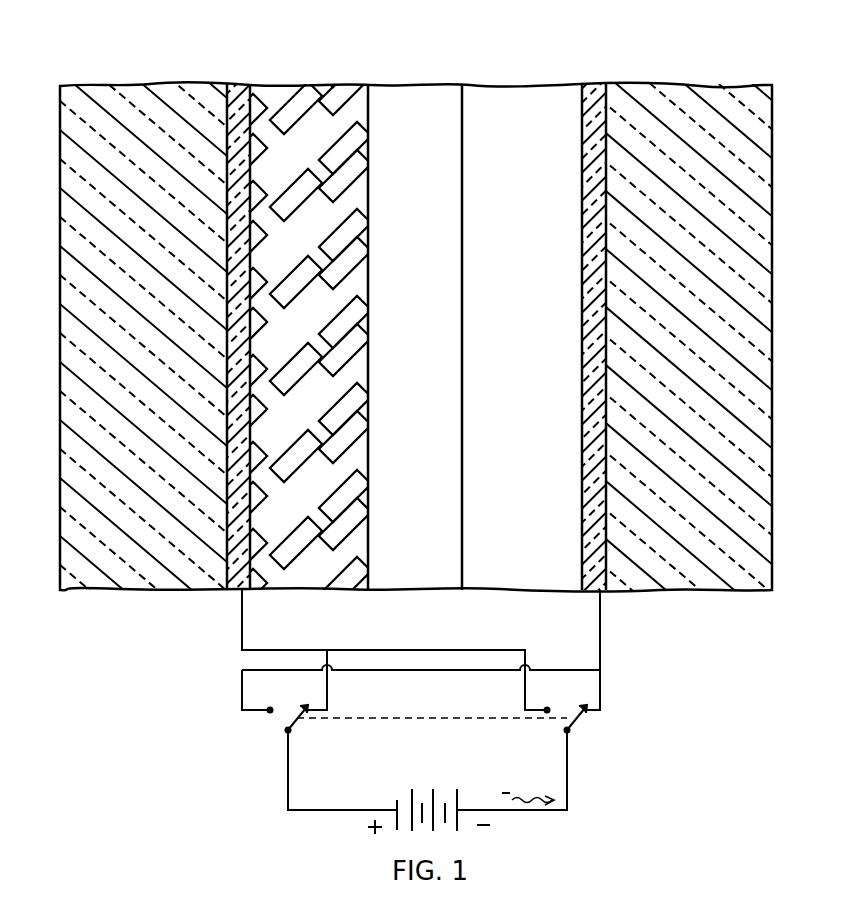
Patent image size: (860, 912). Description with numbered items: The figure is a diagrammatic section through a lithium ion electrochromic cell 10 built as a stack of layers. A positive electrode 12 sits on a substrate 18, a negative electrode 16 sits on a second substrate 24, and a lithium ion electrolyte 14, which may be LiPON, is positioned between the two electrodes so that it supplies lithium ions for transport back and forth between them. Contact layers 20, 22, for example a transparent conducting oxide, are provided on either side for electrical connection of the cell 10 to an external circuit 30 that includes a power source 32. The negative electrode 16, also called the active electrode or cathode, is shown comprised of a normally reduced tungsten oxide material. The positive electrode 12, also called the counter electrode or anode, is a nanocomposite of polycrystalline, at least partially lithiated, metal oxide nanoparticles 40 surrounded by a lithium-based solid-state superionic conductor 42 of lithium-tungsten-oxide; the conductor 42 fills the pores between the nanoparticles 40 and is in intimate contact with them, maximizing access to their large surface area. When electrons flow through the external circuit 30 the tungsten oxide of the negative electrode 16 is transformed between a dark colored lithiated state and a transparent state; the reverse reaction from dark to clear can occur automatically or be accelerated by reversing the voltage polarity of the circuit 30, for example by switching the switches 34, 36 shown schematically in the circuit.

The lithium ion electrochromic cell 10 is at (276, 54).
The positive electrode 12 is at (346, 84).
The lithium ion electrolyte 14 is at (435, 84).
The negative electrode 16 is at (527, 86).
The substrate 18 is at (145, 84).
The contact layer 20 is at (247, 84).
The contact layer 22 is at (595, 85).
The substrate 24 is at (693, 82).
The external circuit 30 is at (203, 748).
The power source 32 is at (457, 830).
The switch 34 is at (574, 708).
The switch 36 is at (300, 708).
The lithiated metal oxide nanoparticles 40 is at (296, 100).
The solid-state superionic conductor 42 is at (346, 90).